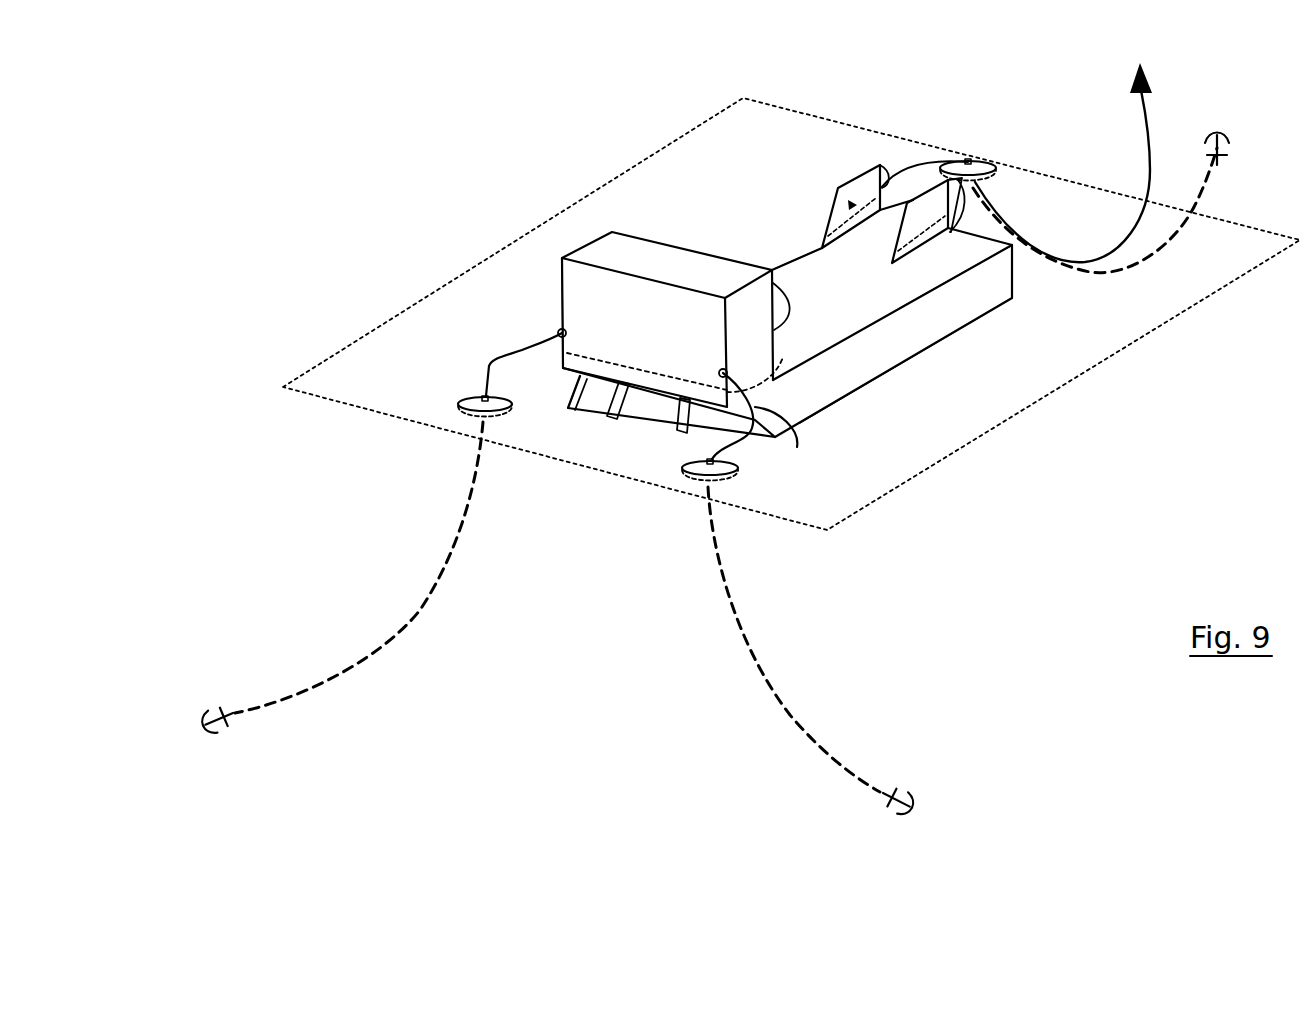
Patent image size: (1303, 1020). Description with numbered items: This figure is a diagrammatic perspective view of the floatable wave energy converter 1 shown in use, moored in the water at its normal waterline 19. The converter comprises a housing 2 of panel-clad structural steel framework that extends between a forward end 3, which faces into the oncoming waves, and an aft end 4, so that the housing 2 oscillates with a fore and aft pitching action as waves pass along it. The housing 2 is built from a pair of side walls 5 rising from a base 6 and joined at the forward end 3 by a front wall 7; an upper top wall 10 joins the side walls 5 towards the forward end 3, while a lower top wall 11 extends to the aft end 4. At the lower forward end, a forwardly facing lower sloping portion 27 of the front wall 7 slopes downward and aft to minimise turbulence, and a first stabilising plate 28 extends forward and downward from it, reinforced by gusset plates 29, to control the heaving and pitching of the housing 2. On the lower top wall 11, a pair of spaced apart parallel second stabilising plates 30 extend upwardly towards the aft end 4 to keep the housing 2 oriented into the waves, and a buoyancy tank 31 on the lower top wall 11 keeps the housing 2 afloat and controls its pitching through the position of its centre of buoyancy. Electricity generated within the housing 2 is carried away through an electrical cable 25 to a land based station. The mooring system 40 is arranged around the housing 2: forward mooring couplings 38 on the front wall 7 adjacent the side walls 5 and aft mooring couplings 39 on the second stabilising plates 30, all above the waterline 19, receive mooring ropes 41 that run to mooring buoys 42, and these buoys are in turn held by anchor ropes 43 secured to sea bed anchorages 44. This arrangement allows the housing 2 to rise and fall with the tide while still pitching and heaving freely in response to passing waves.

The wave energy converter 1 is at (747, 206).
The housing 2 is at (888, 357).
The forward end 3 is at (643, 355).
The aft end 4 is at (1013, 282).
The side walls 5 is at (948, 323).
The base 6 is at (848, 398).
The front wall 7 is at (585, 283).
The upper top wall 10 is at (638, 258).
The lower top wall 11 is at (797, 224).
The waterline 19 is at (973, 443).
The electrical cable 25 is at (1148, 152).
The lower sloping portion 27 is at (580, 377).
The first stabilising plate 28 is at (640, 410).
The gusset plates 29 is at (690, 430).
The second stabilising plates 30 is at (843, 180).
The buoyancy tank 31 is at (782, 297).
The forward mooring couplings 38 is at (558, 331).
The aft mooring couplings 39 is at (885, 165).
The mooring system 40 is at (346, 515).
The mooring ropes 41 is at (483, 375).
The mooring buoys 42 is at (473, 417).
The anchor ropes 43 is at (420, 573).
The sea bed anchorages 44 is at (235, 722).